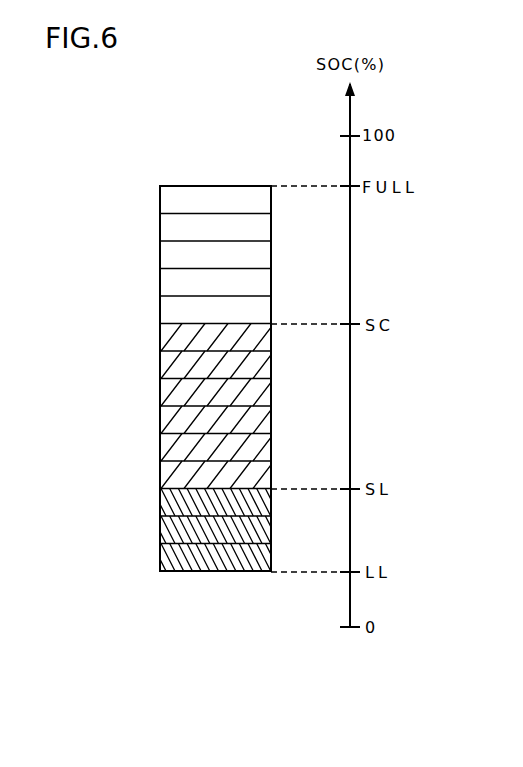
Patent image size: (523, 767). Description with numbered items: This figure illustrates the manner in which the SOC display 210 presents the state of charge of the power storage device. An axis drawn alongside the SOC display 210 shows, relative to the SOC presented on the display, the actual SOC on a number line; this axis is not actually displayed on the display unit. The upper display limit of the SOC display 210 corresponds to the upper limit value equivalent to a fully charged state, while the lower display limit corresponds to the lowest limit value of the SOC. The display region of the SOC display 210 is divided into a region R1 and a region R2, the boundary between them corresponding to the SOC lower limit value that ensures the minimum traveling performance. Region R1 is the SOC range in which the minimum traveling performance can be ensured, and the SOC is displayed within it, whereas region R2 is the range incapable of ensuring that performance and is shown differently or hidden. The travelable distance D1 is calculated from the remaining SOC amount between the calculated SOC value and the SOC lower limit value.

The SOC display 210 is at (212, 169).
The region R1 is at (138, 186).
The region R2 is at (138, 492).
The travelable distance D1 is at (287, 329).